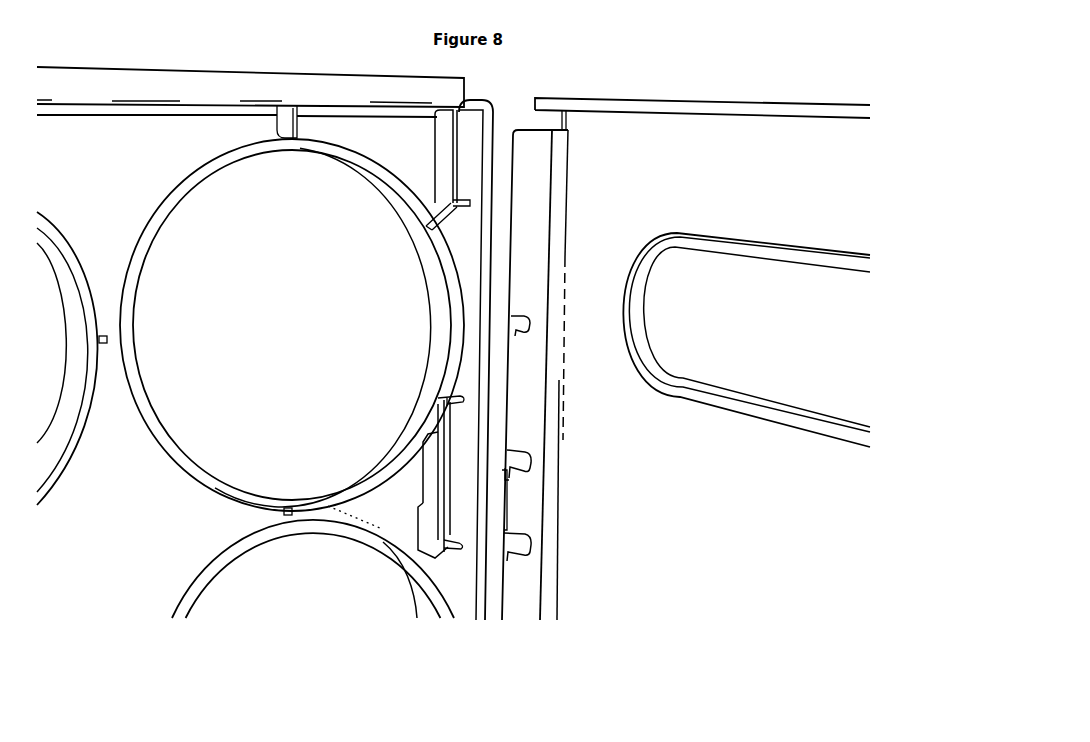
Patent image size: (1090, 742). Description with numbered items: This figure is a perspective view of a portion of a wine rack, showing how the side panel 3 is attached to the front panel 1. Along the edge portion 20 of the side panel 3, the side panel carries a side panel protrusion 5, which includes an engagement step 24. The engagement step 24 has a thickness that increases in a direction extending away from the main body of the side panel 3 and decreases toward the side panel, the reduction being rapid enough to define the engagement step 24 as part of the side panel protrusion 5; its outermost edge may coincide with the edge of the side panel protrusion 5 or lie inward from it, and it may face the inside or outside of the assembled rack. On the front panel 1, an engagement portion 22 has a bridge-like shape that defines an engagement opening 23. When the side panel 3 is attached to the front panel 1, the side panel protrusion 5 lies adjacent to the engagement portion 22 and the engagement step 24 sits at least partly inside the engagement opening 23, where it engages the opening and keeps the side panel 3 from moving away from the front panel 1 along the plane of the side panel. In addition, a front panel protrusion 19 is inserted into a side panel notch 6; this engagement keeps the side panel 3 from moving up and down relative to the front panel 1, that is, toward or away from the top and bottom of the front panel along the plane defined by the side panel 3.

The front panel 1 is at (313, 113).
The side panel 3 is at (731, 108).
The side panel protrusion 5 is at (520, 510).
The side panel notch 6 is at (520, 320).
The front panel protrusion 19 is at (450, 538).
The edge portion 20 is at (533, 258).
The engagement portion 22 is at (433, 455).
The engagement opening 23 is at (430, 478).
The engagement step 24 is at (505, 473).